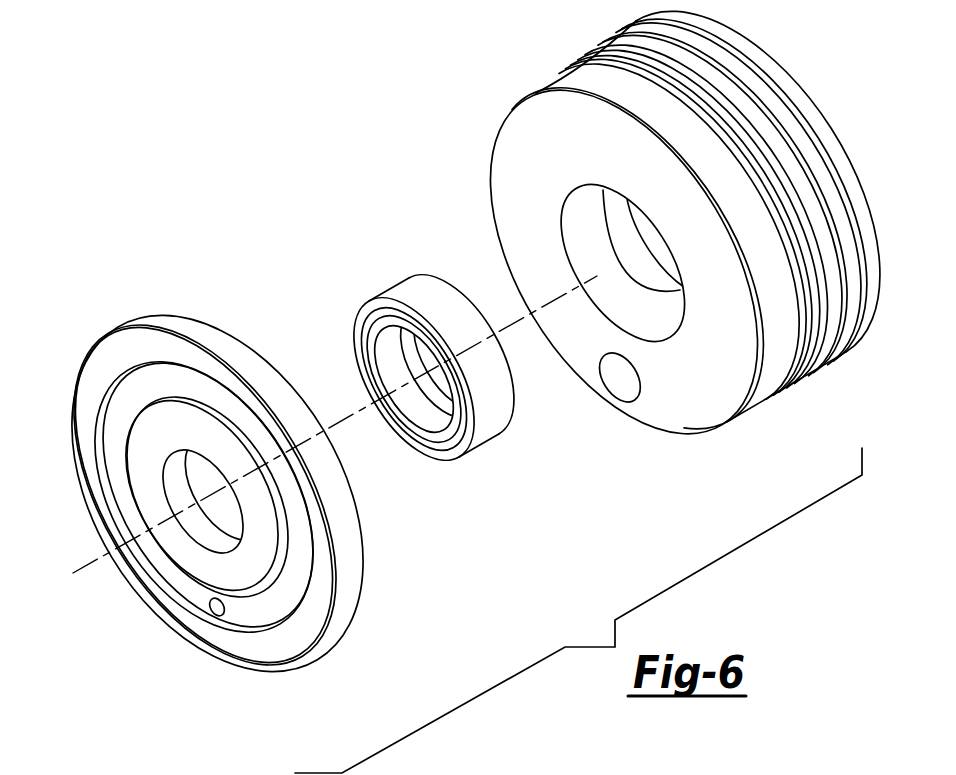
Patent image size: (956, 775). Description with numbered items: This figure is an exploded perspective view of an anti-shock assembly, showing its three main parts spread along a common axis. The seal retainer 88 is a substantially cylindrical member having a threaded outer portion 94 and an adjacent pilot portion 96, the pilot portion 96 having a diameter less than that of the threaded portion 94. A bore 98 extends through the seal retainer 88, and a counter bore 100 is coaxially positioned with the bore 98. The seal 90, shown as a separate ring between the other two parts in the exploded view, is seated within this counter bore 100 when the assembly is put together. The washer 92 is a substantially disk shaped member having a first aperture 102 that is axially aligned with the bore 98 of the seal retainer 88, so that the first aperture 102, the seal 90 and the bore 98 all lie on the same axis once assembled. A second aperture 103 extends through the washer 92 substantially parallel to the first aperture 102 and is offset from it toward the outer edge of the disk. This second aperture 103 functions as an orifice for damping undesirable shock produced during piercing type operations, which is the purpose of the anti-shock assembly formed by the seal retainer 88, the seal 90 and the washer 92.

The seal retainer 88 is at (592, 325).
The seal 90 is at (422, 293).
The washer 92 is at (218, 494).
The threaded outer portion 94 is at (847, 347).
The pilot portion 96 is at (767, 367).
The bore 98 is at (635, 232).
The counter bore 100 is at (648, 317).
The first aperture 102 is at (173, 477).
The second aperture 103 is at (207, 610).